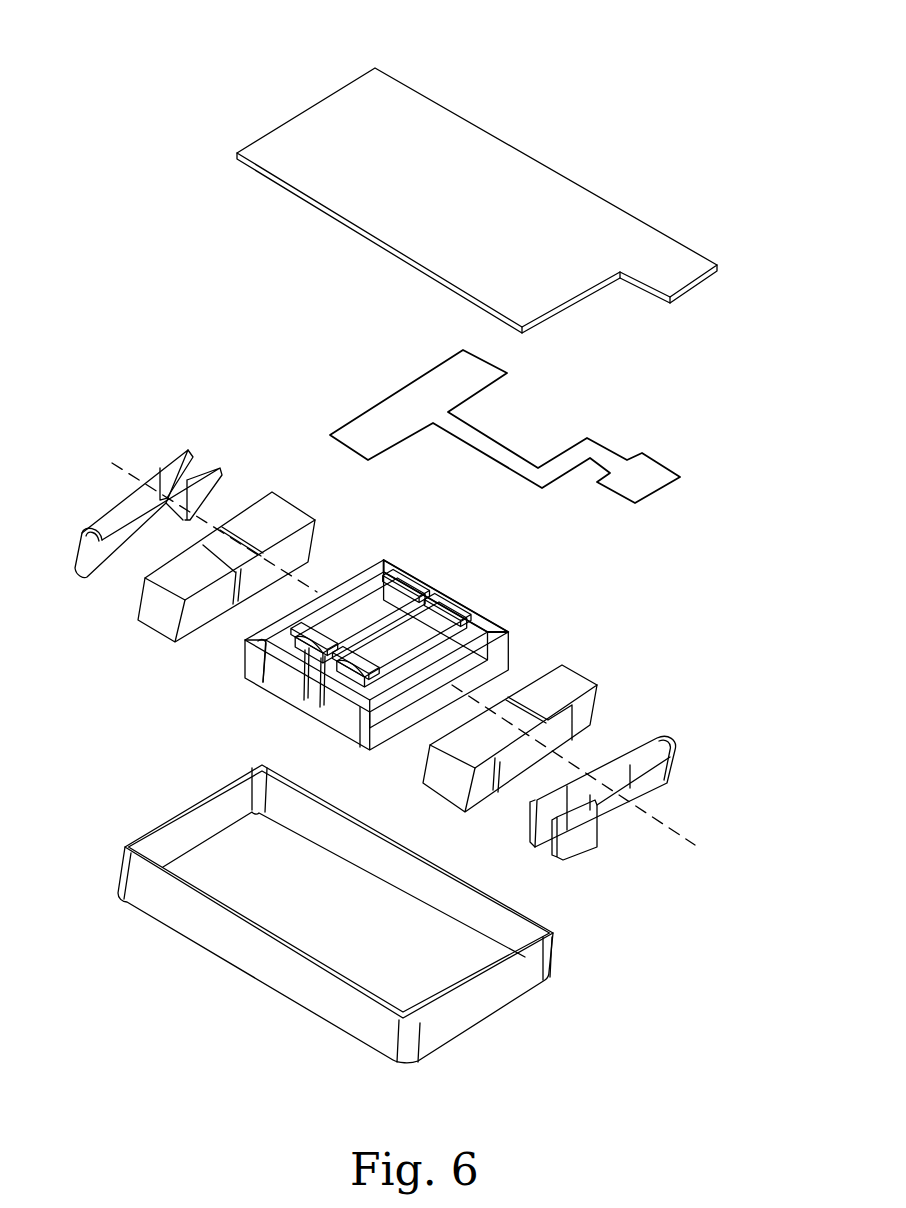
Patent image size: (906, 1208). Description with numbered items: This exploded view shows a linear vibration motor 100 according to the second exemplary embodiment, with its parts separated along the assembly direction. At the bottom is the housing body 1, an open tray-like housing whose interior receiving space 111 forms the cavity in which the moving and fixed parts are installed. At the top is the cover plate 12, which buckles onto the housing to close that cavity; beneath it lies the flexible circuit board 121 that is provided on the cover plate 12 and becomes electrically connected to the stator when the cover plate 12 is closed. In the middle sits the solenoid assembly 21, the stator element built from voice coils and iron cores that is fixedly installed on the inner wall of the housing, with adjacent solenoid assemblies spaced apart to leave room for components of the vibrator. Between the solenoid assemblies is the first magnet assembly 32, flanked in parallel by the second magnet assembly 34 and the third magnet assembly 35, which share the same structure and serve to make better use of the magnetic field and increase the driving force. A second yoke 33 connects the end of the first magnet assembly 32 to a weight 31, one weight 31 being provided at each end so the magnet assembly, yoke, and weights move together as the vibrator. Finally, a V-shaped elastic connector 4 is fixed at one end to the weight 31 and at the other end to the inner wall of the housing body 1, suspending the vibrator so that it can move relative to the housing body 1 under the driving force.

The linear vibration motor 100 is at (700, 50).
The housing body 1 is at (429, 914).
The receiving cavity 111 is at (505, 923).
The cover plate 12 is at (680, 265).
The flexible circuit board 121 is at (648, 480).
The solenoid assembly 21 is at (310, 648).
The weight 31 is at (282, 512).
The first magnet assembly 32 is at (373, 628).
The second yoke 33 is at (370, 573).
The second magnet assembly 34 is at (265, 662).
The third magnet assembly 35 is at (458, 613).
The elastic connector 4 is at (173, 458).